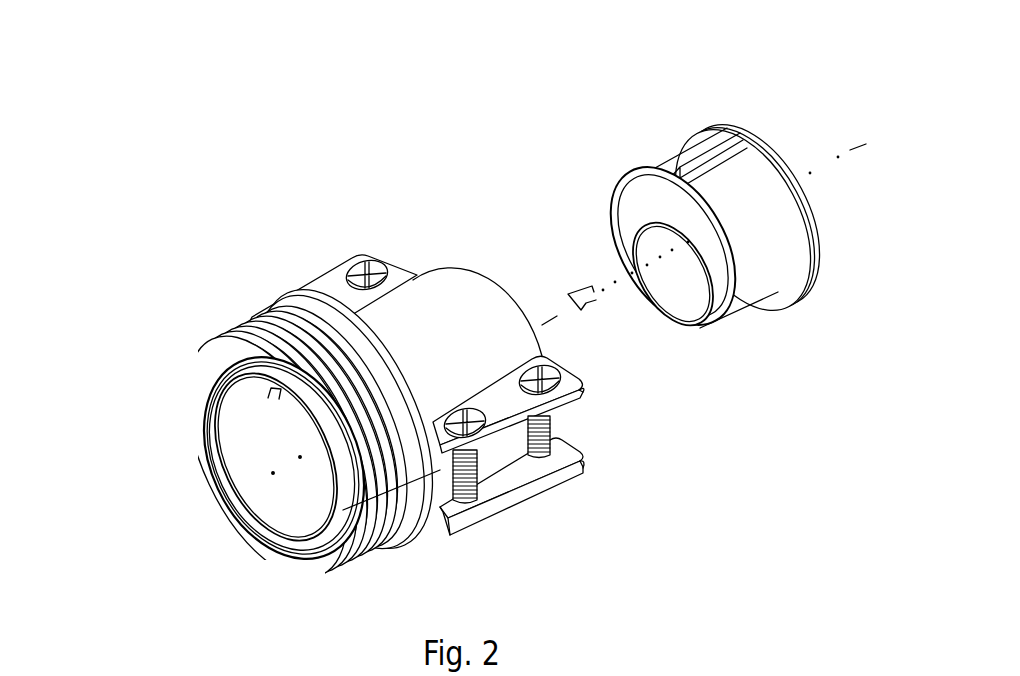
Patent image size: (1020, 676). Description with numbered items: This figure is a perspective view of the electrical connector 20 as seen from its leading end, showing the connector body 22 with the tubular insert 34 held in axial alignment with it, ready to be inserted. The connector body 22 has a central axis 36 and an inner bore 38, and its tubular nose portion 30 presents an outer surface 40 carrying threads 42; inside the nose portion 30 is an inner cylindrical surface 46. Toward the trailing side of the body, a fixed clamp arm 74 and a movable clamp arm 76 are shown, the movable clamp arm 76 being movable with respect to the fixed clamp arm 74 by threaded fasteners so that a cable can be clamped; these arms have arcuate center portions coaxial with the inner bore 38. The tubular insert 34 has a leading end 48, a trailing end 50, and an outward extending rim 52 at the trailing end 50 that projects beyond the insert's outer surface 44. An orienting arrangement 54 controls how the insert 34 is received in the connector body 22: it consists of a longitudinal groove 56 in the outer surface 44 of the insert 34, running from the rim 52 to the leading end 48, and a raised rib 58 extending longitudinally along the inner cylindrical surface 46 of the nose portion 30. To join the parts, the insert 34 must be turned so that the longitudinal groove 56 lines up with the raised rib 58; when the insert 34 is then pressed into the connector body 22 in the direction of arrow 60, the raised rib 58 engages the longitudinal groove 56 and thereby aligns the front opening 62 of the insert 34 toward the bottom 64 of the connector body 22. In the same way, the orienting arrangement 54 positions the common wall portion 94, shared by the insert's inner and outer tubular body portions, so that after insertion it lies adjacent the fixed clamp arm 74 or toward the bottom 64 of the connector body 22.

The electrical connector 20 is at (326, 102).
The connector body 22 is at (228, 256).
The tubular nose portion 30 is at (233, 353).
The tubular insert 34 is at (545, 128).
The central axis 36 is at (827, 163).
The inner bore 38 is at (252, 428).
The outer surface 40 is at (378, 505).
The threads 42 is at (350, 383).
The outer surface 44 is at (767, 225).
The inner cylindrical surface 46 is at (262, 471).
The leading end 48 is at (615, 249).
The trailing end 50 is at (812, 211).
The rim 52 is at (713, 120).
The orienting arrangement 54 is at (277, 420).
The longitudinal groove 56 is at (695, 165).
The raised rib 58 is at (278, 396).
The arrow 60 is at (590, 305).
The front opening 62 is at (671, 273).
The bottom 64 is at (283, 557).
The fixed clamp arm 74 is at (530, 507).
The movable clamp arm 76 is at (586, 465).
The common wall portion 94 is at (690, 336).